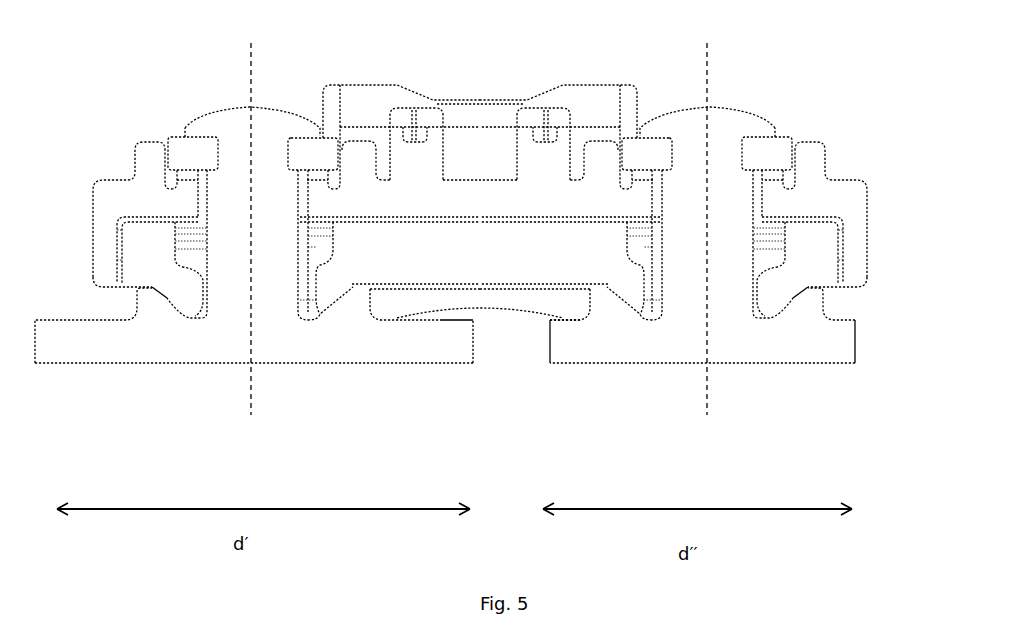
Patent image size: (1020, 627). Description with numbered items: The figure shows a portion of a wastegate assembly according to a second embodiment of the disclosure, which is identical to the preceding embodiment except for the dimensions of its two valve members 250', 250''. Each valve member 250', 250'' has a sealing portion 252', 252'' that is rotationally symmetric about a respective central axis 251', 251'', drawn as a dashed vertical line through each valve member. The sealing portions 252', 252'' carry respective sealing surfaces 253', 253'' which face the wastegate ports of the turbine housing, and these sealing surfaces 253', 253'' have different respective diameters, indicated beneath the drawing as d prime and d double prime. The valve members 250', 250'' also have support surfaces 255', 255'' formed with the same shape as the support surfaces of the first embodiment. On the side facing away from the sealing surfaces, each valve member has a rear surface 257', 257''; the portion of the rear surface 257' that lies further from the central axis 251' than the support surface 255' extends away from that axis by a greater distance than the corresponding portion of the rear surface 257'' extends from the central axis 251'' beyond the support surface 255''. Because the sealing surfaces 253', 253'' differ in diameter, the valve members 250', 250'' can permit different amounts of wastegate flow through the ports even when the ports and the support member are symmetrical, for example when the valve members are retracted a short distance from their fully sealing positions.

The valve member 250' is at (425, 278).
The valve member 250'' is at (630, 278).
The central axis 251' is at (184, 222).
The central axis 251'' is at (749, 225).
The sealing portion 252' is at (252, 377).
The sealing portion 252'' is at (729, 350).
The sealing surface 253' is at (434, 389).
The sealing surface 253'' is at (556, 393).
The support surface 255' is at (162, 336).
The support surface 255'' is at (789, 331).
The rear surface 257' is at (167, 213).
The rear surface 257'' is at (788, 212).